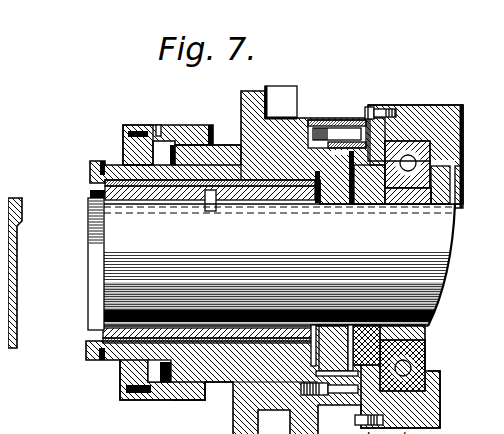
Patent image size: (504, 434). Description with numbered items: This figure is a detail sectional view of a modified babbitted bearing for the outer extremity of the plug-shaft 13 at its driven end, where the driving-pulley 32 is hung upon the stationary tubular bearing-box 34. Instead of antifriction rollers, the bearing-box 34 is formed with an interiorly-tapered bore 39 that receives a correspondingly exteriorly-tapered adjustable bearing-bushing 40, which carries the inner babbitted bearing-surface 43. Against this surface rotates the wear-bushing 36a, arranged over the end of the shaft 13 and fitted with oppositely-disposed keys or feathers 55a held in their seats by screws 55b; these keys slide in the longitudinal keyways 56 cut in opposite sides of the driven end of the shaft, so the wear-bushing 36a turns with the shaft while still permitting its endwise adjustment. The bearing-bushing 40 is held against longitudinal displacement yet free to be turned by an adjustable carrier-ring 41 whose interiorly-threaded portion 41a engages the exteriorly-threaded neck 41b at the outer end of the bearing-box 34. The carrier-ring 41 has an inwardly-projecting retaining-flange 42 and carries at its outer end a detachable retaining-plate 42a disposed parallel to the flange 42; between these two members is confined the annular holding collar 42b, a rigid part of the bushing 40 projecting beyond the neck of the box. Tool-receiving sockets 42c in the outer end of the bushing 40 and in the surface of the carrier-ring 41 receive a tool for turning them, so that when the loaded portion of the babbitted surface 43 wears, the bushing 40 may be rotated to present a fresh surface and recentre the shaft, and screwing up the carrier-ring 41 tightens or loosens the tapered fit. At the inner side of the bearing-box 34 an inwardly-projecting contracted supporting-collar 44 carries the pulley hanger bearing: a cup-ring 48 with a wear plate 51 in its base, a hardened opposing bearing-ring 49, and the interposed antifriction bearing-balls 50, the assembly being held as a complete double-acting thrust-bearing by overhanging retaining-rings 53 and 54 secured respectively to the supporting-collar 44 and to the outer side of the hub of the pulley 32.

The plug-shaft 13 is at (96, 244).
The driving-pulley 32 is at (412, 255).
The tubular bearing-box 34 is at (325, 397).
The wear-bushing 36a is at (86, 190).
The interiorly-tapered bore 39 is at (222, 380).
The adjustable bearing-bushing 40 is at (269, 162).
The adjustable carrier-ring 41 is at (168, 133).
The interiorly-threaded portion 41a is at (168, 394).
The exteriorly-threaded neck 41b is at (207, 133).
The inwardly-projecting retaining-flange 42 is at (148, 132).
The detachable retaining-plate 42a is at (115, 138).
The annular holding collar 42b is at (115, 372).
The tool-receiving sockets 42c is at (150, 117).
The babbitted bearing-surface 43 is at (80, 333).
The supporting-collar 44 is at (338, 113).
The cup-ring 48 is at (350, 197).
The bearing-ring 49 is at (402, 197).
The antifriction bearing-balls 50 is at (400, 146).
The wear plate 51 is at (372, 197).
The retaining-ring 53 is at (437, 200).
The retaining-ring 54 is at (366, 99).
The keys or feathers 55a is at (153, 192).
The screws 55b is at (203, 203).
The longitudinal keyways 56 is at (273, 205).